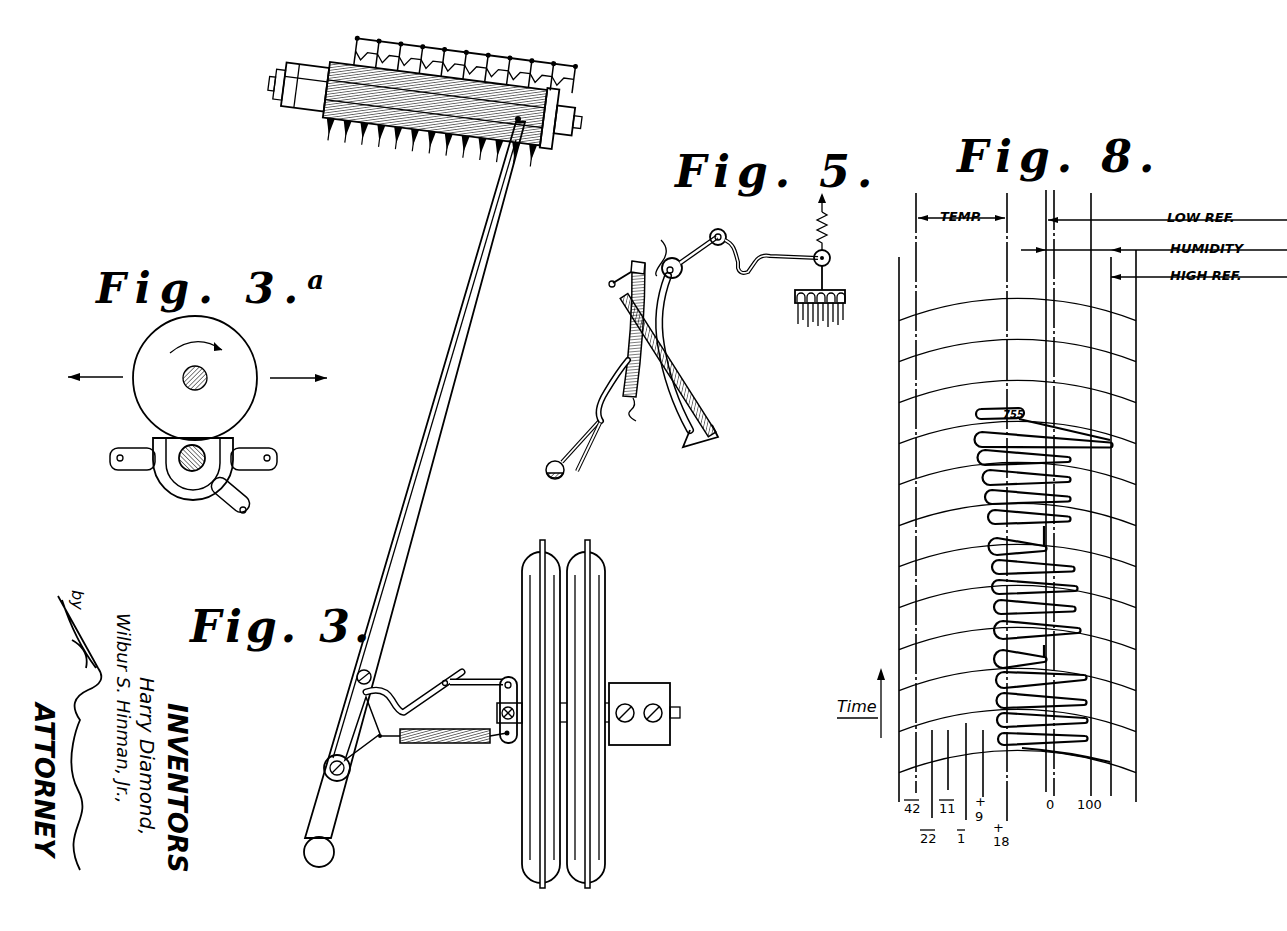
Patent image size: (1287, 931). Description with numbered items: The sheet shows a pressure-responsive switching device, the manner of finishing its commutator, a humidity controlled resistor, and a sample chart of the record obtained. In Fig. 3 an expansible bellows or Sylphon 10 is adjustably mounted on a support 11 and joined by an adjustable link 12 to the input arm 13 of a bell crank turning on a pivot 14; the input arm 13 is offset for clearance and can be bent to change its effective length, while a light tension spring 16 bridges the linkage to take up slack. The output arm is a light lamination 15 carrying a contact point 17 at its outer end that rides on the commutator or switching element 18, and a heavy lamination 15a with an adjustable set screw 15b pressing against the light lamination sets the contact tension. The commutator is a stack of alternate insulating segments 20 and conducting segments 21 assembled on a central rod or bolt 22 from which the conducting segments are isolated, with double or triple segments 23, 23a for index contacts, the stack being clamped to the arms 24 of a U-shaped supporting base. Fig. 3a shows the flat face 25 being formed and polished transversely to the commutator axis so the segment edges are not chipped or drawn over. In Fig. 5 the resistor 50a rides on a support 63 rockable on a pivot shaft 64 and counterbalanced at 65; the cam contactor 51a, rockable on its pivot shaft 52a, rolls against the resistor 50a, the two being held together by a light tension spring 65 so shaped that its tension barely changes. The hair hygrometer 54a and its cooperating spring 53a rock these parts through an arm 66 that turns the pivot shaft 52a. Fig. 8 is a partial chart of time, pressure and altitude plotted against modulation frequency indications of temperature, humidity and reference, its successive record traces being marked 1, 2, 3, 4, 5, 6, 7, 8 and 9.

In FIG. 3, the expansible bellows or Sylphon 10 is at (597, 633).
In FIG. 8, the expansible bellows or Sylphon 10 is at (1038, 567).
In FIG. 3, the support 11 is at (642, 694).
In FIG. 8, the support 11 is at (1022, 540).
In FIG. 3, the adjustable link 12 is at (481, 681).
In FIG. 8, the adjustable link 12 is at (1034, 518).
In FIG. 3, the input arm 13 is at (421, 703).
In FIG. 8, the input arm 13 is at (1033, 497).
In FIG. 3, the pivot 14 is at (324, 771).
In FIG. 8, the pivot 14 is at (1032, 477).
In FIG. 3, the light lamination 15 is at (454, 332).
In FIG. 8, the light lamination 15 is at (1029, 457).
In FIG. 3, the heavy lamination 15a is at (353, 713).
In FIG. 3, the adjustable set screw 15b is at (372, 677).
In FIG. 3, the light tension spring 16 is at (448, 741).
In FIG. 8, the light tension spring 16 is at (1048, 443).
In FIG. 3, the contact point 17 is at (546, 133).
In FIG. 3, the commutator or switching element 18 is at (548, 158).
In FIG. 3, the insulating segments 20 is at (355, 40).
In FIG. 3, the conducting segments 21 is at (348, 142).
In FIG. 3, the central rod or bolt 22 is at (581, 124).
In FIG. 3A, the central rod or bolt 22 is at (185, 470).
In FIG. 3, the double segments 23 is at (572, 82).
In FIG. 3, the triple segments 23a is at (578, 66).
In FIG. 3, the arms of U-shaped supporting base 24 is at (296, 64).
In FIG. 3, the face 25 is at (337, 103).
In FIG. 3A, the face 25 is at (207, 438).
In FIG. 5, the resistor 50a is at (630, 267).
In FIG. 5, the cam contactor 51a is at (665, 300).
In FIG. 5, the pivot shaft 52a is at (734, 231).
In FIG. 5, the spring 53a is at (830, 219).
In FIG. 5, the hair hygrometer 54a is at (812, 323).
In FIG. 5, the support 63 is at (620, 378).
In FIG. 5, the pivot shaft 64 is at (582, 466).
In FIG. 5, the light tension spring 65 is at (686, 393).
In FIG. 5, the arm 66 is at (777, 256).
In FIG. 8, the recorded trace 1 is at (1072, 758).
In FIG. 8, the recorded trace 2 is at (1047, 740).
In FIG. 8, the recorded trace 3 is at (1047, 720).
In FIG. 8, the recorded trace 4 is at (1046, 701).
In FIG. 8, the recorded trace 5 is at (1046, 679).
In FIG. 8, the recorded trace 6 is at (1026, 655).
In FIG. 8, the recorded trace 7 is at (1043, 630).
In FIG. 8, the recorded trace 8 is at (1040, 607).
In FIG. 8, the recorded trace 9 is at (1039, 587).